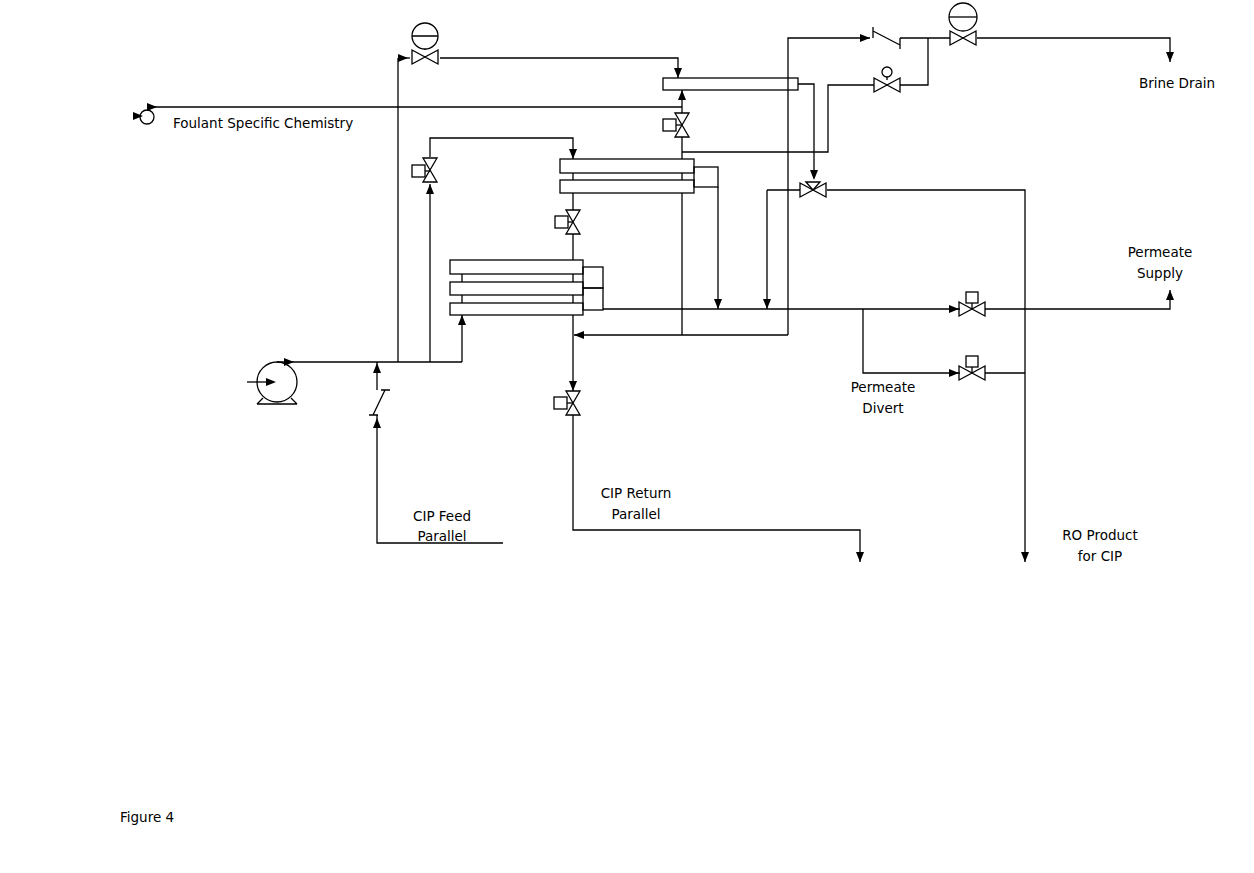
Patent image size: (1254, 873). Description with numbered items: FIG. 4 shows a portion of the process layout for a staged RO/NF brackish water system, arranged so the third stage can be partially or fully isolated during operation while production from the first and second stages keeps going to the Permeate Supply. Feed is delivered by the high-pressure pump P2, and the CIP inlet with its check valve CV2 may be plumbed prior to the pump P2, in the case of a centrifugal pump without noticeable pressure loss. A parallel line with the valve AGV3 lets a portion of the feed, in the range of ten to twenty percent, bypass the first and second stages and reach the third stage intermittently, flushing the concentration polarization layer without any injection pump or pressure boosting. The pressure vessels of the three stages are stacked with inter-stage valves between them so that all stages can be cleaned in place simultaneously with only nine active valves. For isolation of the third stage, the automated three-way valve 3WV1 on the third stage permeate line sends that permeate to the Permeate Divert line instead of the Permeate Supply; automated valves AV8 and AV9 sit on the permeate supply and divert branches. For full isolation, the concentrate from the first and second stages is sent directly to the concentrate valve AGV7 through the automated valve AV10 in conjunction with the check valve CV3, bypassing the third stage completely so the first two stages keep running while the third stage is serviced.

The high-pressure pump P2 is at (276, 407).
The valve AGV3 is at (430, 52).
The check valve CV2 is at (394, 402).
The check valve CV3 is at (886, 46).
The valve AGV7 is at (964, 34).
The automated valve AV10 is at (887, 89).
The 3-way valve 3WV1 is at (817, 198).
The automated valve AV8 is at (972, 313).
The automated valve AV9 is at (972, 377).